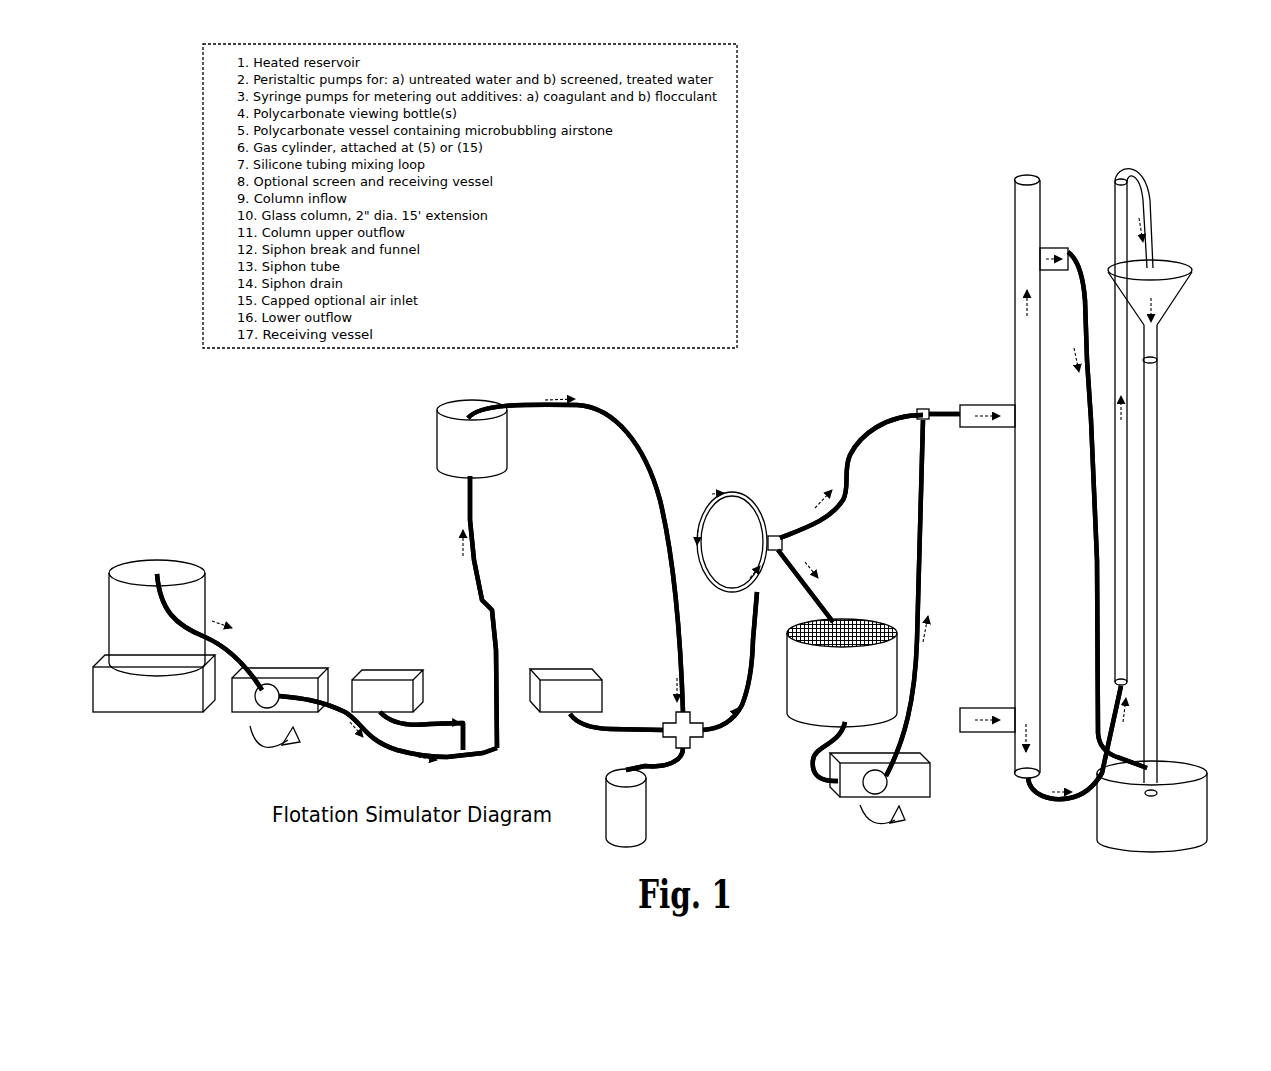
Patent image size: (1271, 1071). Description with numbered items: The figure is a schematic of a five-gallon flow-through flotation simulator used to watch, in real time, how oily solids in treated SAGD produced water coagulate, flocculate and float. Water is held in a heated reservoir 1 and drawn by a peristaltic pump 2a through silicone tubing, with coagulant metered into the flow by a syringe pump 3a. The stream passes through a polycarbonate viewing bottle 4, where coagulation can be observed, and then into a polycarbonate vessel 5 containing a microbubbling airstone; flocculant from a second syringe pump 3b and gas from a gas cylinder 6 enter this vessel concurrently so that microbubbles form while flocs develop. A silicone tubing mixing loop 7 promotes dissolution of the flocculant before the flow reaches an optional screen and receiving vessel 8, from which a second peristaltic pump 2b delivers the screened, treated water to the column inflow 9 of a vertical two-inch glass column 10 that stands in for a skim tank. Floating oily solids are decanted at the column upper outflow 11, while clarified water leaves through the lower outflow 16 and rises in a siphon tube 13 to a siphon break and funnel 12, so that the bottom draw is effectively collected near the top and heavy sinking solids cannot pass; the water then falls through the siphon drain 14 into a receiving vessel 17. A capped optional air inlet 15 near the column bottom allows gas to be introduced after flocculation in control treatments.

The heated reservoir 1 is at (157, 570).
The peristaltic pump for untreated water 2a is at (364, 703).
The peristaltic pump for screened, treated water 2b is at (868, 622).
The syringe pump for coagulant 3a is at (407, 698).
The syringe pump for flocculant 3b is at (596, 689).
The polycarbonate viewing bottle 4 is at (560, 573).
The polycarbonate vessel containing microbubbling airstone 5 is at (664, 768).
The gas cylinder 6 is at (644, 797).
The silicone tubing mixing loop 7 is at (810, 503).
The optional screen and receiving vessel 8 is at (837, 665).
The column inflow 9 is at (966, 404).
The glass column 10 is at (1028, 476).
The column upper outflow 11 is at (1093, 499).
The siphon break and funnel 12 is at (1156, 303).
The siphon tube 13 is at (1123, 427).
The siphon drain 14 is at (1161, 560).
The capped optional air inlet 15 is at (987, 711).
The lower outflow 16 is at (1077, 756).
The receiving vessel 17 is at (1152, 806).